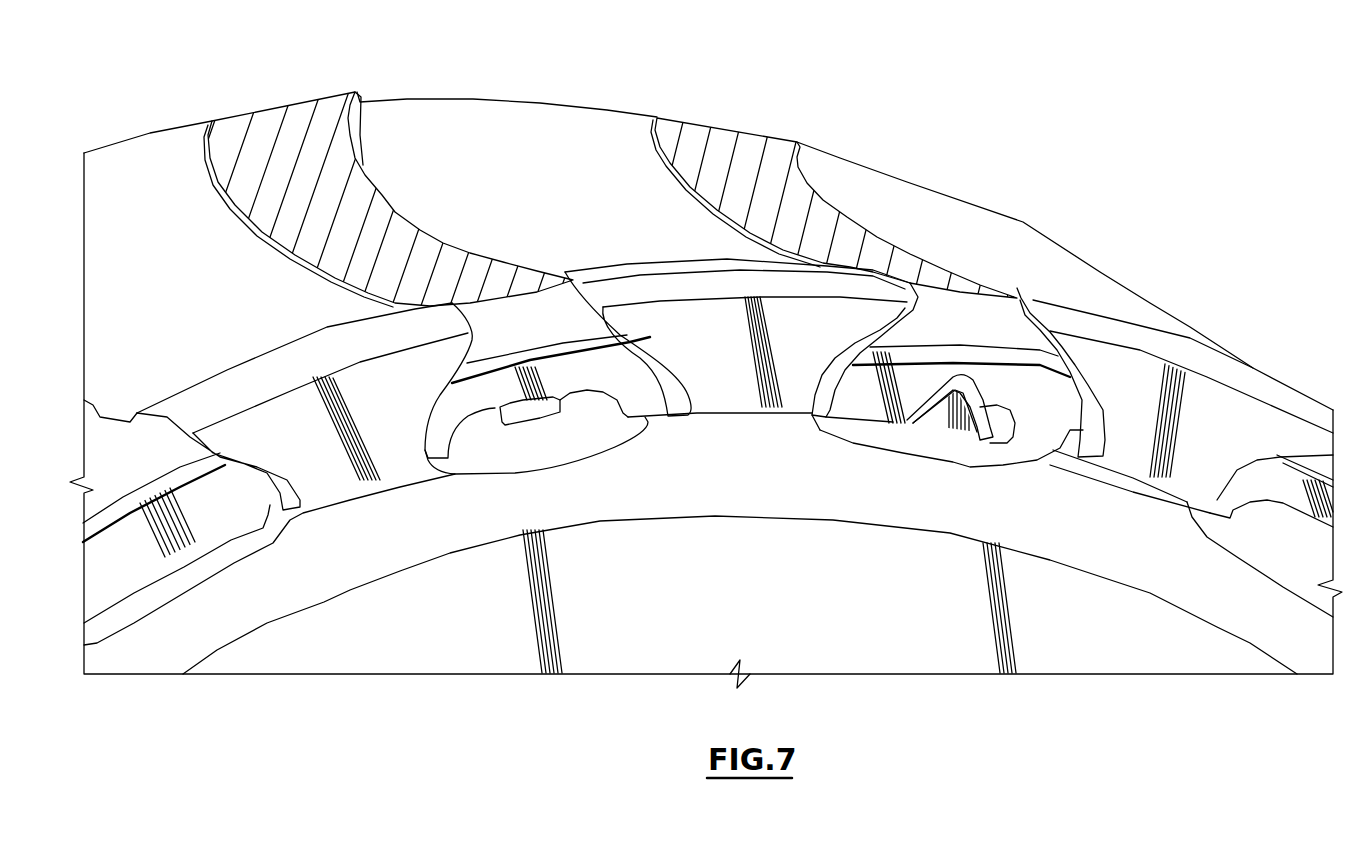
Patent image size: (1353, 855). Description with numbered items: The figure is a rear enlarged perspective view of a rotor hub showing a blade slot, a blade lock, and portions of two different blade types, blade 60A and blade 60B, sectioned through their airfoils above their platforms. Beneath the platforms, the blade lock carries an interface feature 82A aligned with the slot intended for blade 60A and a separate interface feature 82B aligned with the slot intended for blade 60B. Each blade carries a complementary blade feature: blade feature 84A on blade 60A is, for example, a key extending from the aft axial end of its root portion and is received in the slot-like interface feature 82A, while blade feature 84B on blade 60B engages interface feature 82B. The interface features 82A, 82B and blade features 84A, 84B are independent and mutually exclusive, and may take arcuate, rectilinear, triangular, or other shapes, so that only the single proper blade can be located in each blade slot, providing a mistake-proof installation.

The blade 60A is at (388, 187).
The blade 60B is at (845, 200).
The interface feature 82A is at (622, 442).
The blade feature 84A is at (525, 454).
The interface feature 82B is at (1021, 464).
The blade feature 84B is at (950, 440).